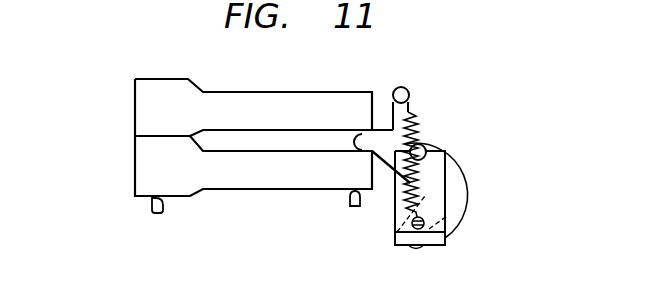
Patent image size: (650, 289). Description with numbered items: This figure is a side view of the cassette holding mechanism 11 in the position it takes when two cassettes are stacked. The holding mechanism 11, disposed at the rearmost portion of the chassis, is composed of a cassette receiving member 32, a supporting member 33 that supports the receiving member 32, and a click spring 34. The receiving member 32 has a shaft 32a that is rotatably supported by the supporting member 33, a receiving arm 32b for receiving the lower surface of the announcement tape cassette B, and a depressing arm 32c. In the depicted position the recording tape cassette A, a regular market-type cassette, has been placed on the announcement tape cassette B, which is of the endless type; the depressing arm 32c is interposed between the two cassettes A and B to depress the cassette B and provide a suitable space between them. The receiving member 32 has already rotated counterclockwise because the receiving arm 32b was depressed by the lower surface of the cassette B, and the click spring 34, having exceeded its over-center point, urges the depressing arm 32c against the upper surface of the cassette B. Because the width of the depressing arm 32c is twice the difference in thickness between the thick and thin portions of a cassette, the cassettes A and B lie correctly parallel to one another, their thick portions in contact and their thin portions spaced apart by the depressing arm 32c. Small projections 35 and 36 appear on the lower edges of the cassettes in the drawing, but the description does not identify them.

The holding mechanism 11 is at (468, 125).
The recording tape cassette A is at (236, 92).
The announcement tape cassette B is at (233, 189).
The cassette receiving member 32 is at (385, 163).
The shaft 32a is at (427, 148).
The receiving arm 32b is at (412, 249).
The depressing arm 32c is at (358, 136).
The supporting member 33 is at (447, 226).
The click spring 34 is at (412, 128).
The stop tab 35 is at (150, 207).
The stop tab 36 is at (349, 200).